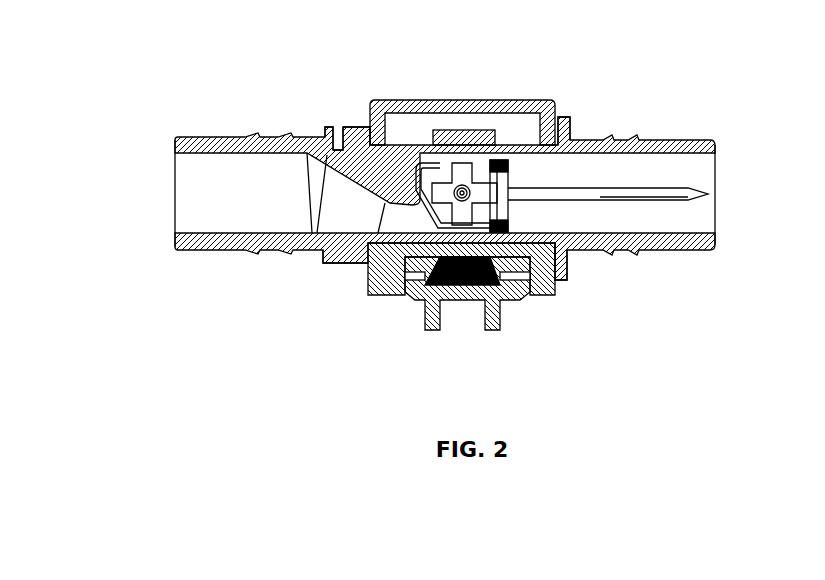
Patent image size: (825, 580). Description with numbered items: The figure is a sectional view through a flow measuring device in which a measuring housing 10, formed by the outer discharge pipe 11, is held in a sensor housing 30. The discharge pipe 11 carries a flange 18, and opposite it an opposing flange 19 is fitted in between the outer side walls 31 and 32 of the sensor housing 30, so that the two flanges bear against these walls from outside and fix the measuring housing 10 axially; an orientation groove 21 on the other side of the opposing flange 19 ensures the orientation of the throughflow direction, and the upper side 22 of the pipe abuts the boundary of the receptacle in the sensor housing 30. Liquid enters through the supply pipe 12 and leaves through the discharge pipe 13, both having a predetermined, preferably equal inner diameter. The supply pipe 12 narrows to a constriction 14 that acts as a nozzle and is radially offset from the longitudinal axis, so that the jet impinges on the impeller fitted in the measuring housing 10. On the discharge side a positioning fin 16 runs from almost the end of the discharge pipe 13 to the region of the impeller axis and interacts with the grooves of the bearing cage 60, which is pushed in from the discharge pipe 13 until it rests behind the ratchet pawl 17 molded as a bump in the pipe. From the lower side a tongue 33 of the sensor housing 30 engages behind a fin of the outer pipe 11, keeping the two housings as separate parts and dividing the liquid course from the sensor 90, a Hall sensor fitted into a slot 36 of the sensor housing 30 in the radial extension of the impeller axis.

The measuring housing 10 is at (676, 116).
The discharge pipe 11 is at (338, 258).
The supply pipe 12 is at (207, 155).
The discharge pipe 13 is at (678, 153).
The constriction 14 is at (402, 215).
The positioning fin 16 is at (708, 194).
The ratchet pawl 17 is at (556, 284).
The flange 18 is at (566, 118).
The opposing flange 19 is at (346, 128).
The orientation groove 21 is at (330, 130).
The upper side 22 is at (418, 162).
The sensor housing 30 is at (492, 100).
The side wall 31 is at (555, 290).
The side wall 32 is at (371, 100).
The tongue 33 is at (458, 130).
The slot 36 is at (527, 300).
The bearing cage 60 is at (508, 170).
The sensor 90 is at (470, 300).